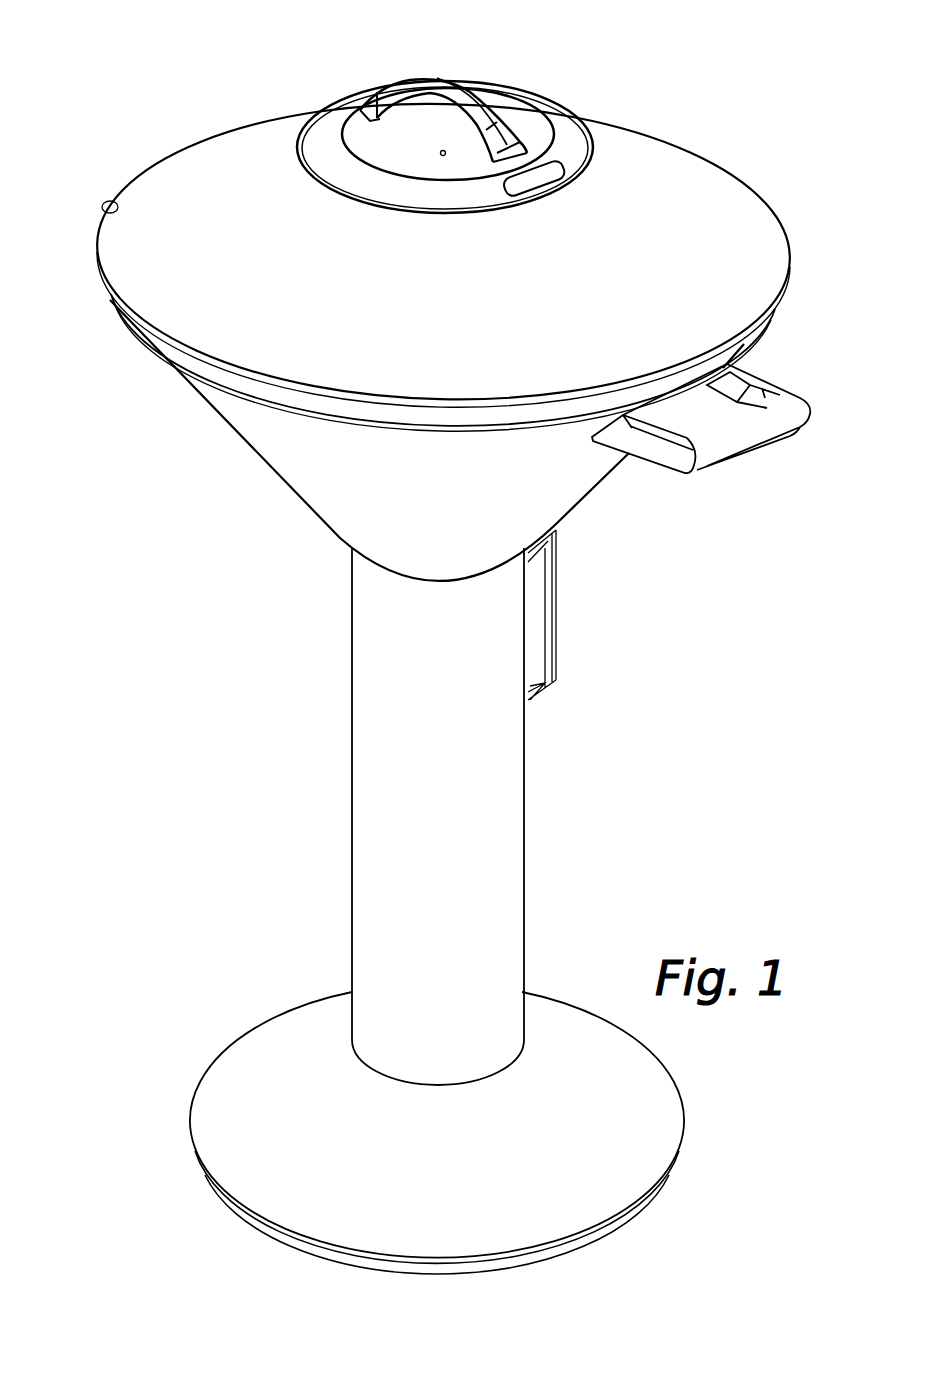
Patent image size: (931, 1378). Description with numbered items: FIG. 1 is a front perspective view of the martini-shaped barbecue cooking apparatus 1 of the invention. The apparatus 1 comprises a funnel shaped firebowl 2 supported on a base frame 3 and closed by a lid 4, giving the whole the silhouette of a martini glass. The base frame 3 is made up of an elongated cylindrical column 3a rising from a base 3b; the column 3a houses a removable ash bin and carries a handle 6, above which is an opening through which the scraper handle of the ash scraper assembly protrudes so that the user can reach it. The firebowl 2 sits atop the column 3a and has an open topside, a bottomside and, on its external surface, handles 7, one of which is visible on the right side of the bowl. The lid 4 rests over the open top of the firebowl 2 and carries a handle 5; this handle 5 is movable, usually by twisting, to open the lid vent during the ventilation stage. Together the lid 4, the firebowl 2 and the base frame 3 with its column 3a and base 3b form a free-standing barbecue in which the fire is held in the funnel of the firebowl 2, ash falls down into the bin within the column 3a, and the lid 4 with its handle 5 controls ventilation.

The martini shaped barbecue cooking apparatus 1 is at (438, 651).
The funnel shaped firebowl 2 is at (303, 482).
The base frame 3 is at (455, 911).
The elongated column 3a is at (372, 902).
The base 3b is at (650, 1170).
The lid 4 is at (722, 196).
The handle 5 is at (470, 98).
The handle 6 is at (553, 657).
The handles 7 is at (733, 447).